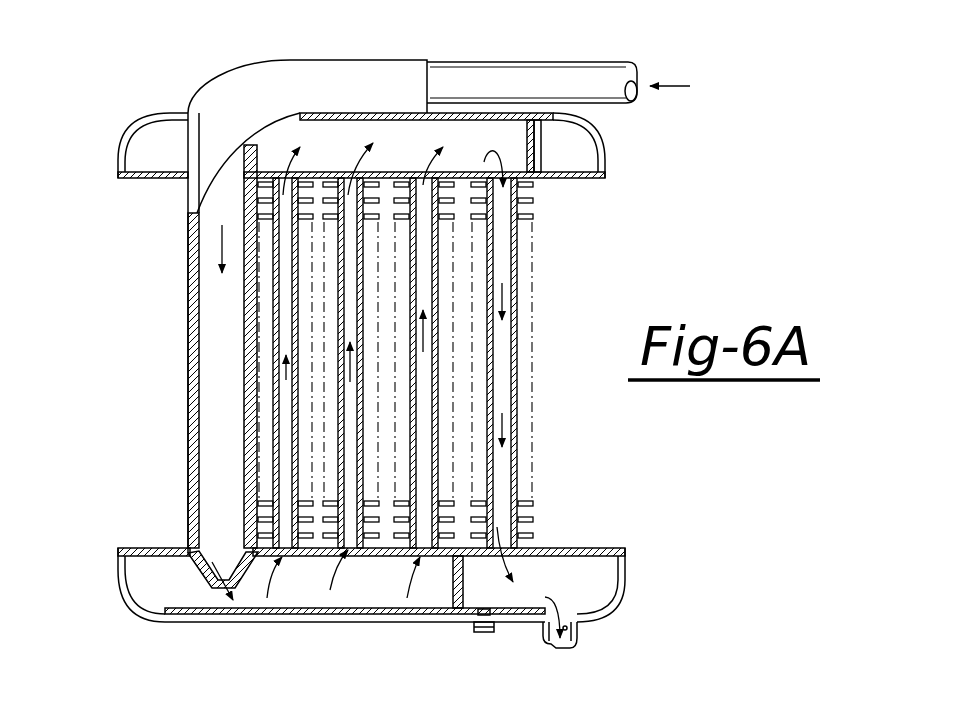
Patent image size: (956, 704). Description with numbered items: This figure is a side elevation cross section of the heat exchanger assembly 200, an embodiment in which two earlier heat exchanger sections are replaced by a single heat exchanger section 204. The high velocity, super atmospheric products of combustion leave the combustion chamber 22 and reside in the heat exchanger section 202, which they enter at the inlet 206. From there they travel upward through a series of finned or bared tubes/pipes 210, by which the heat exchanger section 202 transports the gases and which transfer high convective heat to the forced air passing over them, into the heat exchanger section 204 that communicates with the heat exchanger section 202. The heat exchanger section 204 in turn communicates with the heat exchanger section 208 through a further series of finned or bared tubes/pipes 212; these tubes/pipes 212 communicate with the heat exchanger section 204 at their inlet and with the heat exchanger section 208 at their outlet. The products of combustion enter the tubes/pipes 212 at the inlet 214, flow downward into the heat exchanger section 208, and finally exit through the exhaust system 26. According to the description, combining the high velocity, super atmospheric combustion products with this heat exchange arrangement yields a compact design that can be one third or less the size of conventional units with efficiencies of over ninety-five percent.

The heat exchanger assembly 200 is at (158, 66).
The combustion chamber 22 is at (227, 313).
The inlet 214 is at (513, 180).
The heat exchanger section 204 is at (342, 143).
The finned or bared tubes/pipes 212 is at (500, 232).
The finned or bared tubes/pipes 210 is at (353, 263).
The heat exchanger section 202 is at (277, 600).
The heat exchanger section 208 is at (560, 565).
The inlet 206 is at (213, 580).
The exhaust system 26 is at (578, 645).